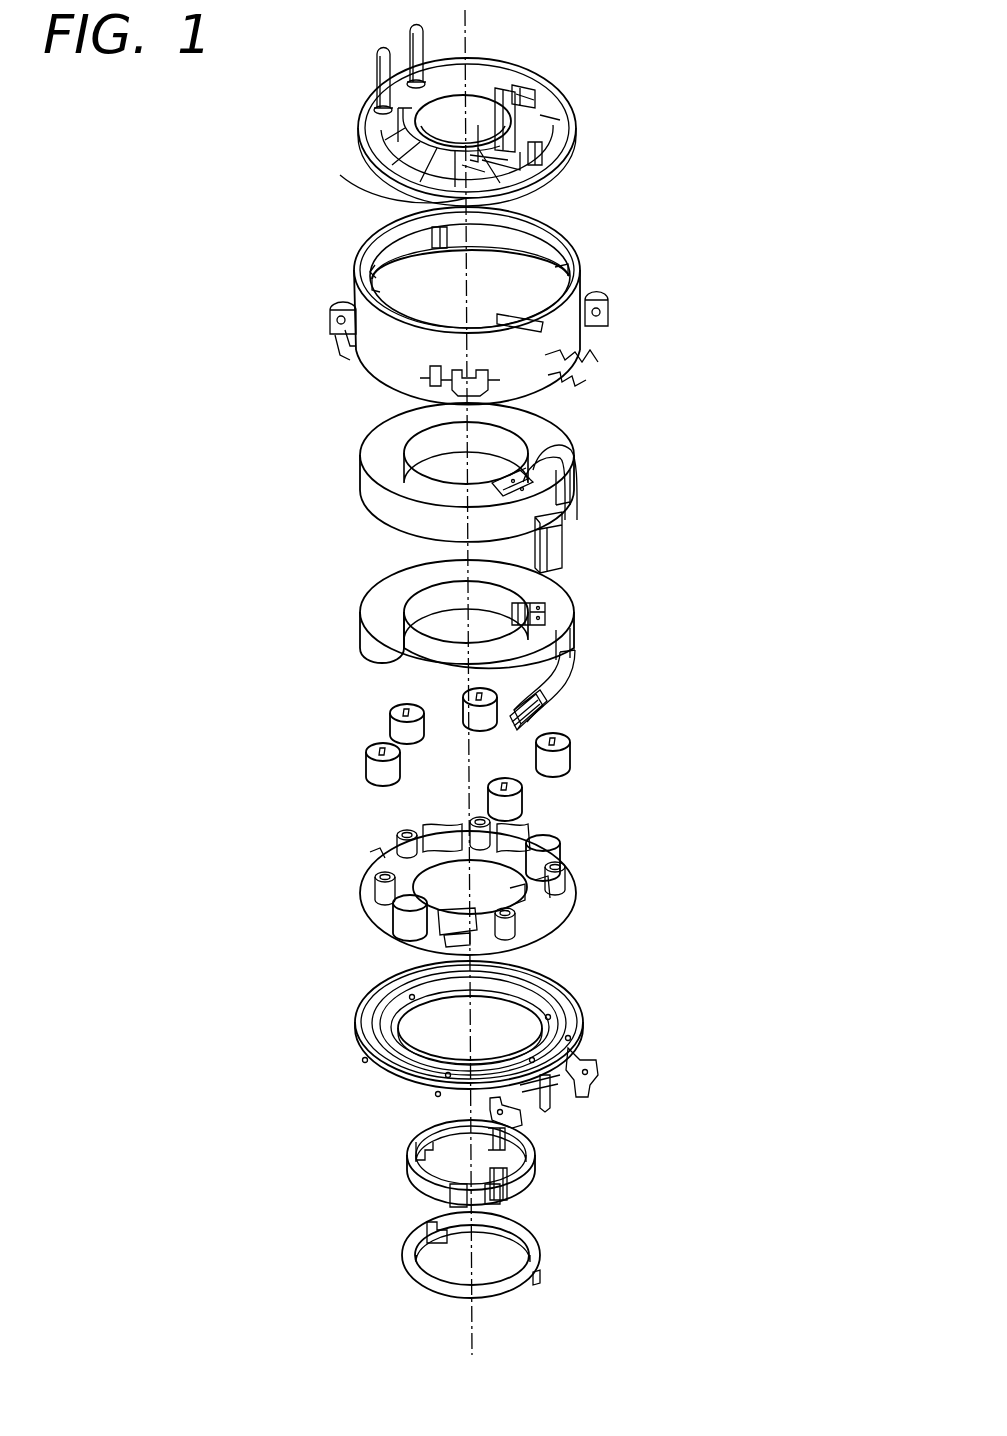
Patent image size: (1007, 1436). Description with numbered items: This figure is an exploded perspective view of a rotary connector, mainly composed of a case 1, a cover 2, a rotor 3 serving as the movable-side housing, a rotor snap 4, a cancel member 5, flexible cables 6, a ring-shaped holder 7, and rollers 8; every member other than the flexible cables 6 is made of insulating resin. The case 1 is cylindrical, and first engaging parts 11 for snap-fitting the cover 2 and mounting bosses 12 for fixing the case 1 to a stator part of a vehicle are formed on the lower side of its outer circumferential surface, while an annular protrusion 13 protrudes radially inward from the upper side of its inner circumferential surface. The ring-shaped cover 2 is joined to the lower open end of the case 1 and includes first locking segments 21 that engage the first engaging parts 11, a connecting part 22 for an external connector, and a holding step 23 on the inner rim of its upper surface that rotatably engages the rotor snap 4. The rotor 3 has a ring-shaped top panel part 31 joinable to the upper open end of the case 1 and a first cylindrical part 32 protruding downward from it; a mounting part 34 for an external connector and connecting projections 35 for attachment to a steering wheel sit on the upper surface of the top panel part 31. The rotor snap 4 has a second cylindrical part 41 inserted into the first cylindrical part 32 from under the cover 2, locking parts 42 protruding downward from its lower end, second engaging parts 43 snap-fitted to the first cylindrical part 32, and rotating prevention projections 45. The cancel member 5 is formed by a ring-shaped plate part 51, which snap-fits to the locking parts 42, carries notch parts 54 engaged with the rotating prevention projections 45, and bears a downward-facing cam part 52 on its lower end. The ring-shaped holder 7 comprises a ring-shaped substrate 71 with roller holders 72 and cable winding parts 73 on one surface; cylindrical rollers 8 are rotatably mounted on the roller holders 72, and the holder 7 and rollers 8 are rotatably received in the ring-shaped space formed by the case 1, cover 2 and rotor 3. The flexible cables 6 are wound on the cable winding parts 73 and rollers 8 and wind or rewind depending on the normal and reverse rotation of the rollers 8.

The case 1 is at (477, 308).
The first engaging parts 11 is at (430, 382).
The mounting bosses 12 is at (330, 316).
The annular protrusion 13 is at (380, 242).
The cover 2 is at (471, 1044).
The first locking segments 21 is at (363, 1061).
The connecting part 22 is at (562, 1093).
The holding step 23 is at (412, 1040).
The rotor 3 is at (475, 104).
The top panel part 31 is at (367, 130).
The first cylindrical part 32 is at (477, 123).
The mounting part 34 is at (543, 123).
The connecting projections 35 is at (379, 62).
The rotor snap 4 is at (487, 1179).
The second cylindrical part 41 is at (415, 1180).
The locking parts 42 is at (513, 1182).
The second engaging parts 43 is at (498, 1188).
The rotating prevention projections 45 is at (425, 1150).
The cancel member 5 is at (467, 1281).
The ring-shaped plate part 51 is at (410, 1262).
The cam part 52 is at (493, 1237).
The notch parts 54 is at (425, 1223).
The flexible cables 6 is at (563, 432).
The ring-shaped holder 7 is at (478, 887).
The ring-shaped substrate 71 is at (565, 908).
The roller holders 72 is at (397, 834).
The cable winding parts 73 is at (560, 843).
The rollers 8 is at (392, 706).